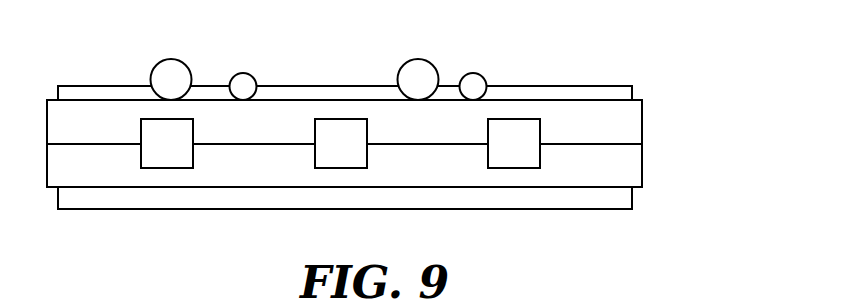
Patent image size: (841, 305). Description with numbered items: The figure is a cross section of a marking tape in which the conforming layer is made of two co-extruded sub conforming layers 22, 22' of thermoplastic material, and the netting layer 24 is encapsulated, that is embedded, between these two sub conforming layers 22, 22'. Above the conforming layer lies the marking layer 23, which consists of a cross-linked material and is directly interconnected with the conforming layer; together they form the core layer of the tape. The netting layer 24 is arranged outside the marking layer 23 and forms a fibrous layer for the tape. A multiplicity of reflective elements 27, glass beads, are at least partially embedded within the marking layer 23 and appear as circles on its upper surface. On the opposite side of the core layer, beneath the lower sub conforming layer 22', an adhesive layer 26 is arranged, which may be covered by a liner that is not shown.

The sub conforming layer 22 is at (380, 122).
The sub conforming layer 22' is at (383, 166).
The marking layer 23 is at (71, 94).
The netting layer 24 is at (166, 148).
The adhesive layer 26 is at (485, 198).
The reflective elements 27 is at (171, 70).